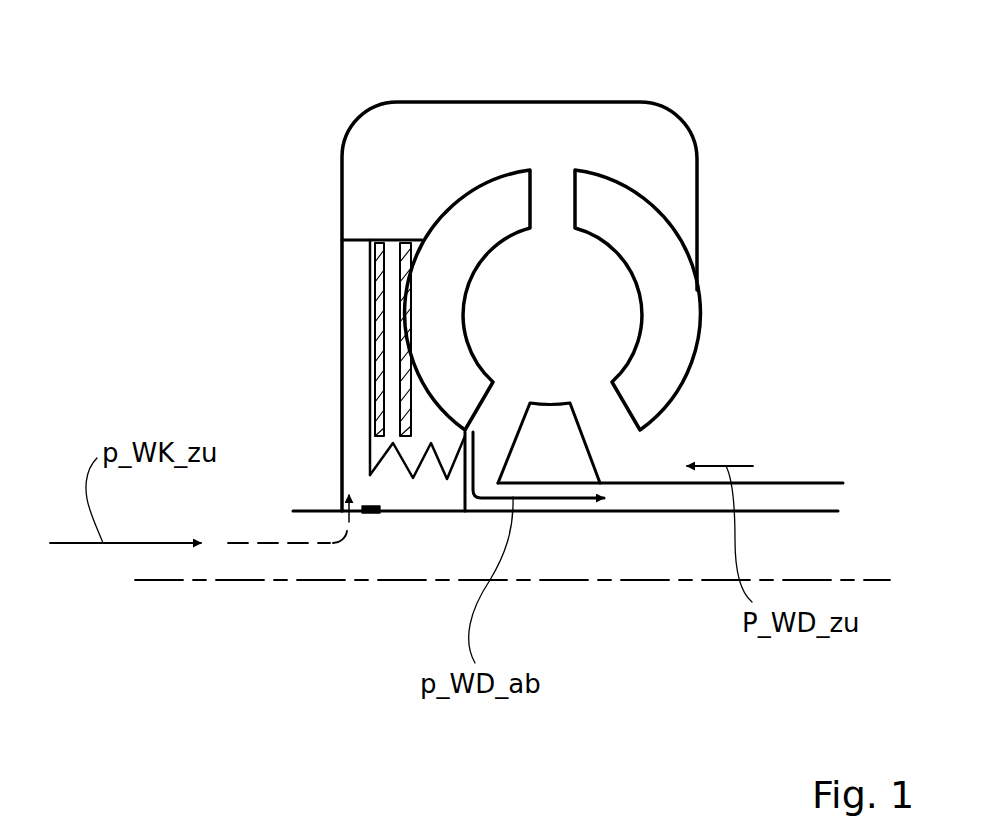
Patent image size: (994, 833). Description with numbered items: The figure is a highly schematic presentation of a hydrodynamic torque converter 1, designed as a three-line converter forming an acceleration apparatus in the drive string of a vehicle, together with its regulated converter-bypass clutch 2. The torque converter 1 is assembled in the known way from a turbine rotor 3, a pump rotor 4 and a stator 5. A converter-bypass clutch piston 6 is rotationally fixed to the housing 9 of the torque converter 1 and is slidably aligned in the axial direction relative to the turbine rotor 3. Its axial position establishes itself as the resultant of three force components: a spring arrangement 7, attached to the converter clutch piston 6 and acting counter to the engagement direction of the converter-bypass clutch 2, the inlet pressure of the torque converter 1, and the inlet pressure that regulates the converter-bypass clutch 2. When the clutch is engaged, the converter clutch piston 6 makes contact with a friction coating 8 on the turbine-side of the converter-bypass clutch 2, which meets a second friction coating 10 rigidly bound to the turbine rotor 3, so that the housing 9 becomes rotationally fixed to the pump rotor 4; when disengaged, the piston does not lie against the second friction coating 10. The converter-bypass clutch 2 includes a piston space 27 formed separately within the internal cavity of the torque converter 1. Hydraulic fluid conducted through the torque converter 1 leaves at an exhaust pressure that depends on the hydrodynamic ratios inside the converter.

The hydrodynamic torque converter 1 is at (760, 170).
The converter-bypass clutch 2 is at (287, 317).
The turbine rotor 3 is at (380, 240).
The pump rotor 4 is at (625, 222).
The stator 5 is at (560, 452).
The converter-bypass clutch piston 6 is at (400, 437).
The spring arrangement 7 is at (372, 455).
The friction coating 8 is at (458, 233).
The housing 9 is at (342, 220).
The second friction coating 10 is at (408, 412).
The piston space 27 is at (357, 283).